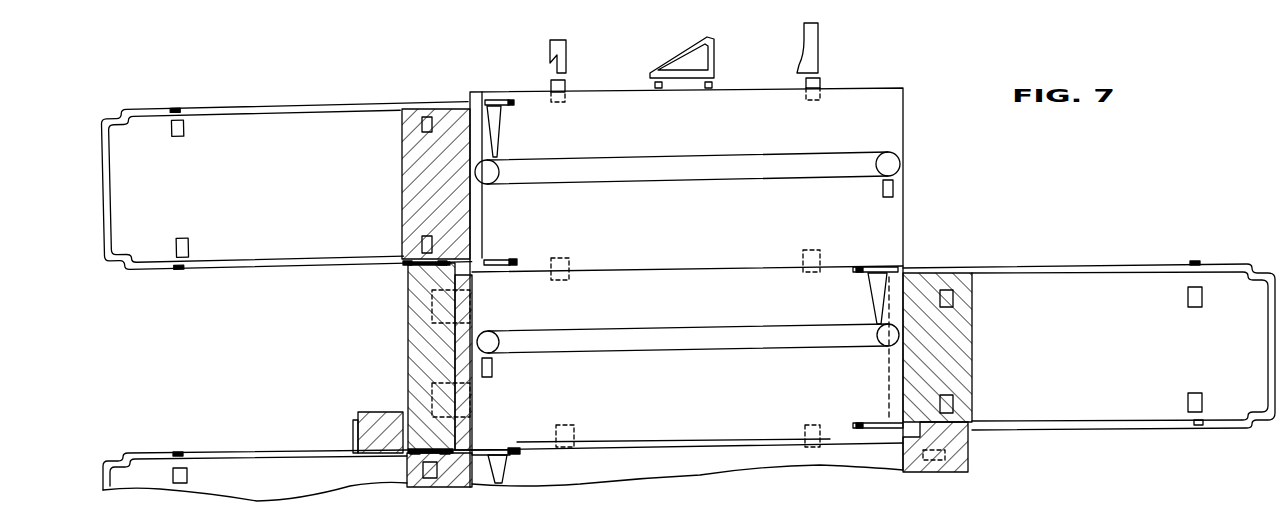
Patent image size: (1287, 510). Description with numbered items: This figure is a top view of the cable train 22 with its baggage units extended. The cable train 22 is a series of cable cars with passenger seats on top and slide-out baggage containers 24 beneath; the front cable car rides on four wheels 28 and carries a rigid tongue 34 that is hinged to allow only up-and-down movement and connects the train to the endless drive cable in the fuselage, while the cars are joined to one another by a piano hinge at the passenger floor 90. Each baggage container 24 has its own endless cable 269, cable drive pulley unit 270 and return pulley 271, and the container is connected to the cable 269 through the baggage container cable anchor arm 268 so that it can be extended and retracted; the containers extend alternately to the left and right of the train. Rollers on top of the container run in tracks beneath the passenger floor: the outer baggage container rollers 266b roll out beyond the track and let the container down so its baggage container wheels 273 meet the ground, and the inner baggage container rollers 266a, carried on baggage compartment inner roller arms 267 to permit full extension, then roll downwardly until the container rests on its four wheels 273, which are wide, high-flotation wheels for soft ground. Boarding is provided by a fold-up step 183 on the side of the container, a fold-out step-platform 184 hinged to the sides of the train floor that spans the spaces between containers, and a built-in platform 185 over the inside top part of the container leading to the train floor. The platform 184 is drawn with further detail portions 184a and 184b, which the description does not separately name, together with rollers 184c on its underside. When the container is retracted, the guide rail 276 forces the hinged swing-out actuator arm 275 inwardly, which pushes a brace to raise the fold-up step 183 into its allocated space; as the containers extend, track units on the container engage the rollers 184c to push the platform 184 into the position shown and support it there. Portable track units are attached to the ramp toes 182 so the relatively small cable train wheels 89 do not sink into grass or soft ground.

The cable train 22 is at (675, 316).
The slide-out baggage container 24 is at (306, 193).
The wheels 28 is at (798, 138).
The rigid tongue 34 is at (717, 62).
The cable train wheels 89 is at (567, 95).
The passenger floor 90 is at (745, 270).
The ramp toes 182 is at (567, 60).
The fold-up step 183 is at (372, 412).
The fold-out step-platform 184 is at (410, 345).
The support block portion 184a is at (467, 304).
The support block recess 184b is at (405, 314).
The rollers 184c is at (446, 266).
The built-in platform 185 is at (402, 134).
The inner baggage container rollers 266a is at (513, 105).
The outer baggage container rollers 266b is at (178, 109).
The baggage compartment inner roller arms 267 is at (495, 86).
The baggage container cable anchor arm 268 is at (500, 130).
The endless cable 269 is at (681, 157).
The cable drive pulley unit 270 is at (880, 188).
The return pulley 271 is at (487, 185).
The baggage container wheels 273 is at (186, 133).
The hinged swing-out actuator arm 275 is at (458, 448).
The guide rail 276 is at (545, 429).